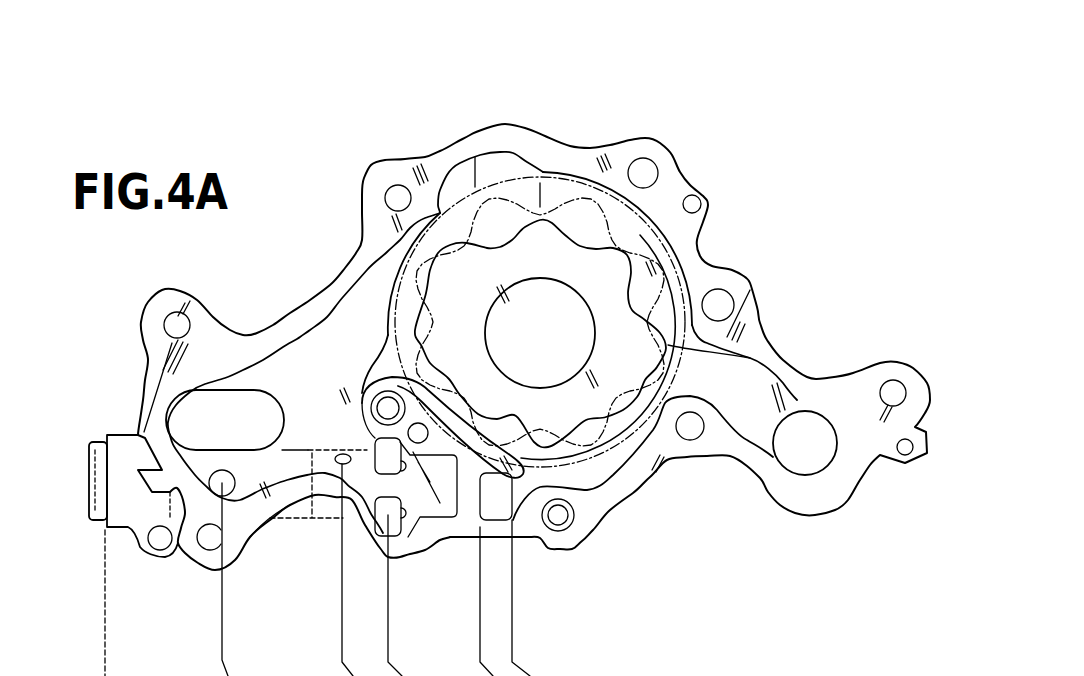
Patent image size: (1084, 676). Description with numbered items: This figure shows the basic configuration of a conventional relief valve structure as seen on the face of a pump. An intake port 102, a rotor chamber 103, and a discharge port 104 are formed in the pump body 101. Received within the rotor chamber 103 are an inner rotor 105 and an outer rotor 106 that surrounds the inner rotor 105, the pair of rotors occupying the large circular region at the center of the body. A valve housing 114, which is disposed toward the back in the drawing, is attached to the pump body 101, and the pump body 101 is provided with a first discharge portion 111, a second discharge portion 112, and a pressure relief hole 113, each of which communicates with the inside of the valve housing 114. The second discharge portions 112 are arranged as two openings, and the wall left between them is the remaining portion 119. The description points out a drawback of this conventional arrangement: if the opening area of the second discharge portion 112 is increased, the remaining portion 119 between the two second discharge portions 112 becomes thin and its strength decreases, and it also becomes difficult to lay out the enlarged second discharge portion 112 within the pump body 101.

The pump body 101 is at (686, 131).
The intake port 102 is at (220, 423).
The rotor chamber 103 is at (573, 205).
The discharge port 104 is at (807, 445).
The inner rotor 105 is at (468, 277).
The outer rotor 106 is at (423, 300).
The first discharge portion 111 is at (340, 473).
The second discharge portion 112 is at (401, 500).
The pressure relief hole 113 is at (215, 490).
The valve housing 114 is at (290, 520).
The remaining portion 119 is at (385, 490).